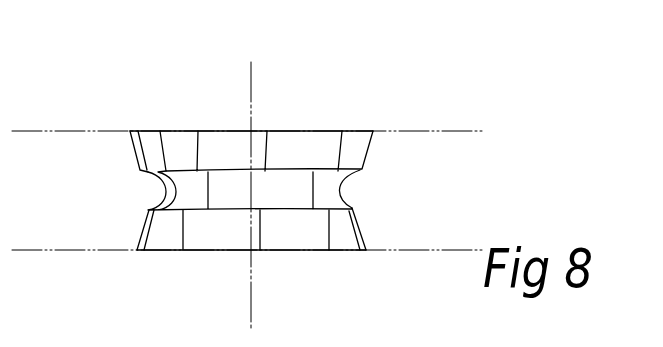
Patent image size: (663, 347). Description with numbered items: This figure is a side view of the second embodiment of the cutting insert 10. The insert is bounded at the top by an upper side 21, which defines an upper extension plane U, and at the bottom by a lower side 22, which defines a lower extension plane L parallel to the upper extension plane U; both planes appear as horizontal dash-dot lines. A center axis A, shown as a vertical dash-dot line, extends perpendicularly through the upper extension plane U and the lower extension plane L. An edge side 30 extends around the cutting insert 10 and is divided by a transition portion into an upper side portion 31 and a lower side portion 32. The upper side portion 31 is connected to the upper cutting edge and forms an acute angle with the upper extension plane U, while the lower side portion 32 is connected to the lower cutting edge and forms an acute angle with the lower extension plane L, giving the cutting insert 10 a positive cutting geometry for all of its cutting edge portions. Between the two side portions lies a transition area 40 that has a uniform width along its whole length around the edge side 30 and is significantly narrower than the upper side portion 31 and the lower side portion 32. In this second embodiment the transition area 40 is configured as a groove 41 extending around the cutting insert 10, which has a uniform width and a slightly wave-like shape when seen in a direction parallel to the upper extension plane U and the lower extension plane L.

The cutting insert 10 is at (263, 174).
The upper side 21 is at (290, 130).
The lower side 22 is at (285, 252).
The edge side 30 is at (244, 114).
The upper side portion 31 is at (354, 150).
The lower side portion 32 is at (290, 262).
The transition area 40 is at (238, 189).
The groove 41 is at (333, 190).
The center axis A is at (250, 87).
The upper extension plane U is at (71, 129).
The lower extension plane L is at (71, 251).